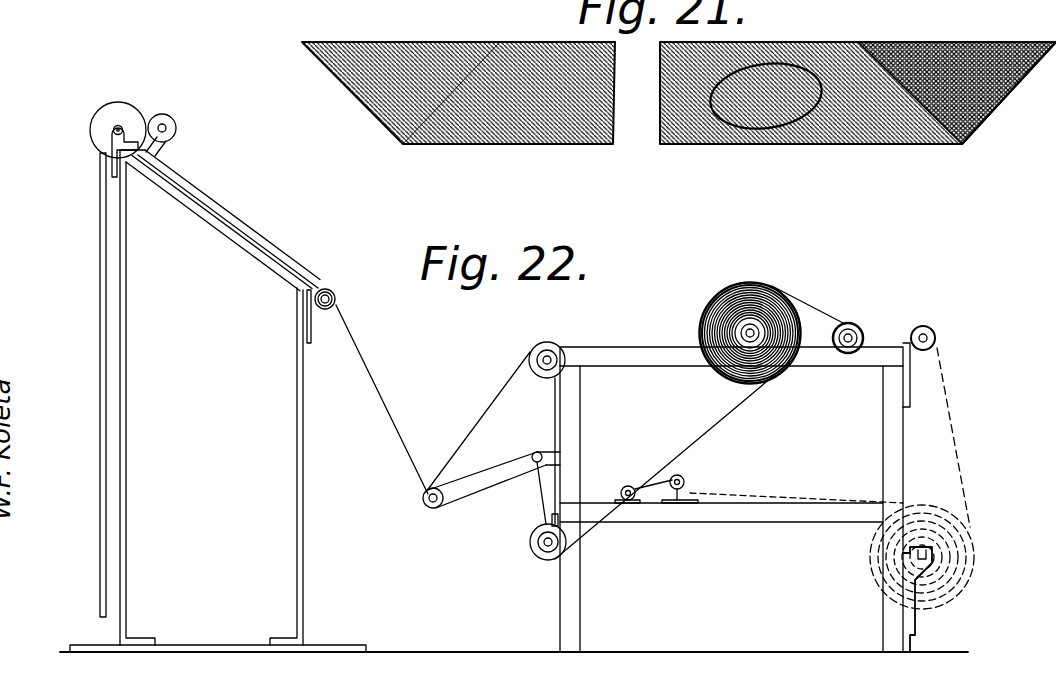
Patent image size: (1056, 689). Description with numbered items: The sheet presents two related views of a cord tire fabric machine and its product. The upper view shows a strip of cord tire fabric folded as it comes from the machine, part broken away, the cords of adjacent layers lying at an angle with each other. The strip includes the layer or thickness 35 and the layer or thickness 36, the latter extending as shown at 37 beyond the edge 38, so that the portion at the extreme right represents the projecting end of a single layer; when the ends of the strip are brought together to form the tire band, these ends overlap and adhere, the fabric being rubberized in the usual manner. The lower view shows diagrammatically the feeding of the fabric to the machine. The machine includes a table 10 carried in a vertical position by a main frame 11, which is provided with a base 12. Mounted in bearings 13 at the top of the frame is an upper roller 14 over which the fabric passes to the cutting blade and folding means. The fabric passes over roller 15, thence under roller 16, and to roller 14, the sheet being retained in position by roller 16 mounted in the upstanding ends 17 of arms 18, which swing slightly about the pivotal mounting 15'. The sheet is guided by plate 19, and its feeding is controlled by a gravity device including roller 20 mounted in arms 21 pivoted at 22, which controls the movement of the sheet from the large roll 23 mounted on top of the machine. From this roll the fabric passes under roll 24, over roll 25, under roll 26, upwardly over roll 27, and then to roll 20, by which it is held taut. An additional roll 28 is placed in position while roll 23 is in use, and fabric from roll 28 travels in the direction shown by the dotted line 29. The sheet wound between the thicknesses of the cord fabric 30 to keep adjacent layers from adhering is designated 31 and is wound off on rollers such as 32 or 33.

In FIG. 22, the table 10 is at (97, 172).
In FIG. 22, the main frame 11 is at (127, 283).
In FIG. 22, the base 12 is at (185, 644).
In FIG. 22, the bearings 13 is at (113, 138).
In FIG. 22, the upper roller 14 is at (121, 104).
In FIG. 22, the roller 15 is at (355, 303).
In FIG. 22, the pivotal mounting 15' is at (337, 282).
In FIG. 22, the roller 16 is at (176, 127).
In FIG. 22, the upstanding ends 17 is at (172, 140).
In FIG. 22, the arms 18 is at (196, 184).
In FIG. 22, the plate 19 is at (262, 232).
In FIG. 22, the roller 20 is at (434, 488).
In FIG. 22, the arms 21 is at (498, 485).
In FIG. 22, the pivot 22 is at (537, 452).
In FIG. 22, the large roll 23 is at (743, 286).
In FIG. 22, the roll 24 is at (681, 474).
In FIG. 22, the roll 25 is at (638, 471).
In FIG. 22, the roll 26 is at (541, 557).
In FIG. 22, the roll 27 is at (551, 350).
In FIG. 22, the additional roll 28 is at (946, 557).
In FIG. 22, the dotted line 29 is at (753, 497).
In FIG. 22, the cord fabric 30 is at (380, 393).
In FIG. 22, the sheet 31 is at (827, 316).
In FIG. 22, the roller 32 is at (863, 328).
In FIG. 22, the roller 33 is at (930, 327).
In FIG. 21, the layer 35 is at (772, 50).
In FIG. 21, the layer 36 is at (950, 56).
In FIG. 21, the extending portion 37 is at (1007, 94).
In FIG. 21, the edge 38 is at (883, 44).